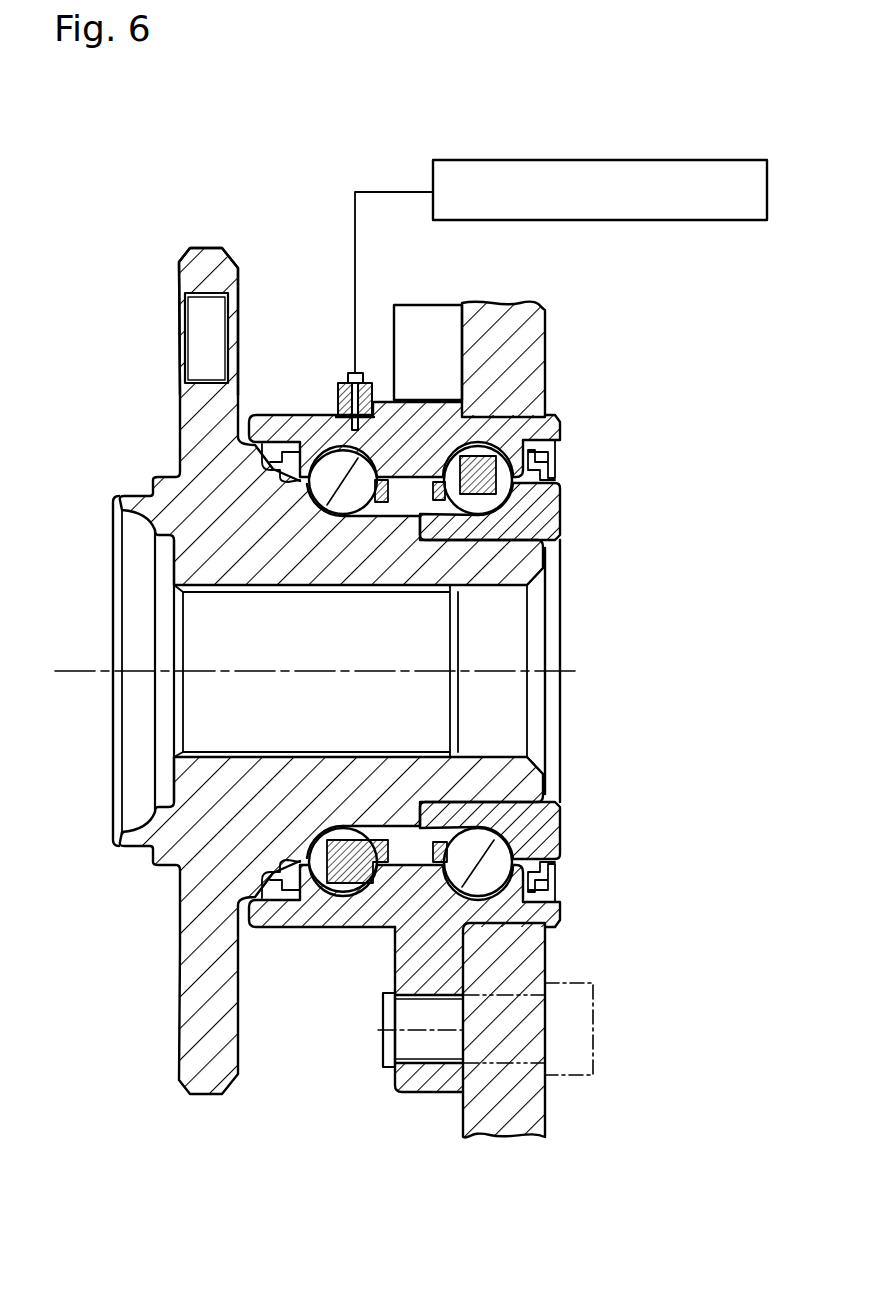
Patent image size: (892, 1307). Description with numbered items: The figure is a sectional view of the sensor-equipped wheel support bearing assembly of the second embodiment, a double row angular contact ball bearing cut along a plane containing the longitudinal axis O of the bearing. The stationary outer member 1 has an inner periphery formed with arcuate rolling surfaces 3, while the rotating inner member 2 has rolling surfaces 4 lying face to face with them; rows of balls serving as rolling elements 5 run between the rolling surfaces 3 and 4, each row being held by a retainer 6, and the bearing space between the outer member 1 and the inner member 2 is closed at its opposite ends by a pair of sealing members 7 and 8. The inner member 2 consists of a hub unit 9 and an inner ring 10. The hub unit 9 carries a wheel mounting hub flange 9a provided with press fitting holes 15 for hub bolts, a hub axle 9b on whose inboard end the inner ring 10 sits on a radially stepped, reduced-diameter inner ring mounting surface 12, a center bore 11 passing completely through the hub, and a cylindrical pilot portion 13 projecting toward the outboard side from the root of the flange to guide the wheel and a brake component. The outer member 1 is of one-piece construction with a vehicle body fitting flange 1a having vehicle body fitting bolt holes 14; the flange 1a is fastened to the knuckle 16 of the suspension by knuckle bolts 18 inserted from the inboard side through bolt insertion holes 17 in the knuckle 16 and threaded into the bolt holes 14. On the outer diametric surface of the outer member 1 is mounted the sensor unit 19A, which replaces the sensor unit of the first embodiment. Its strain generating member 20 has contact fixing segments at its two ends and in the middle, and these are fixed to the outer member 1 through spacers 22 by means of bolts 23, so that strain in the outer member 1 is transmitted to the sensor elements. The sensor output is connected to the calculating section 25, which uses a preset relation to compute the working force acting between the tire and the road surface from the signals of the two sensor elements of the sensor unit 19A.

The outer member 1 is at (337, 933).
The vehicle body fitting flange 1a is at (432, 1092).
The inner member 2 is at (50, 556).
The rolling surfaces 3 is at (315, 905).
The rolling surfaces 4 is at (480, 855).
The rolling elements 5 is at (322, 912).
The retainer 6 is at (430, 850).
The sealing member 7 is at (262, 462).
The sealing member 8 is at (570, 468).
The hub unit 9 is at (190, 558).
The wheel mounting hub flange 9a is at (200, 248).
The hub axle 9b is at (498, 570).
The inner ring 10 is at (300, 590).
The center bore 11 is at (240, 750).
The inner ring mounting surface 12 is at (535, 518).
The cylindrical pilot portion 13 is at (113, 498).
The vehicle body fitting bolt holes 14 is at (393, 1047).
The press fitting holes 15 is at (203, 296).
The knuckle 16 is at (510, 1143).
The bolt insertion holes 17 is at (520, 1045).
The knuckle bolts 18 is at (598, 1052).
The sensor unit 19A is at (320, 365).
The strain generating member 20 is at (338, 397).
The spacers 22 is at (338, 416).
The bolts 23 is at (350, 373).
The calculating section 25 is at (612, 158).
The axis of rotation O is at (490, 672).